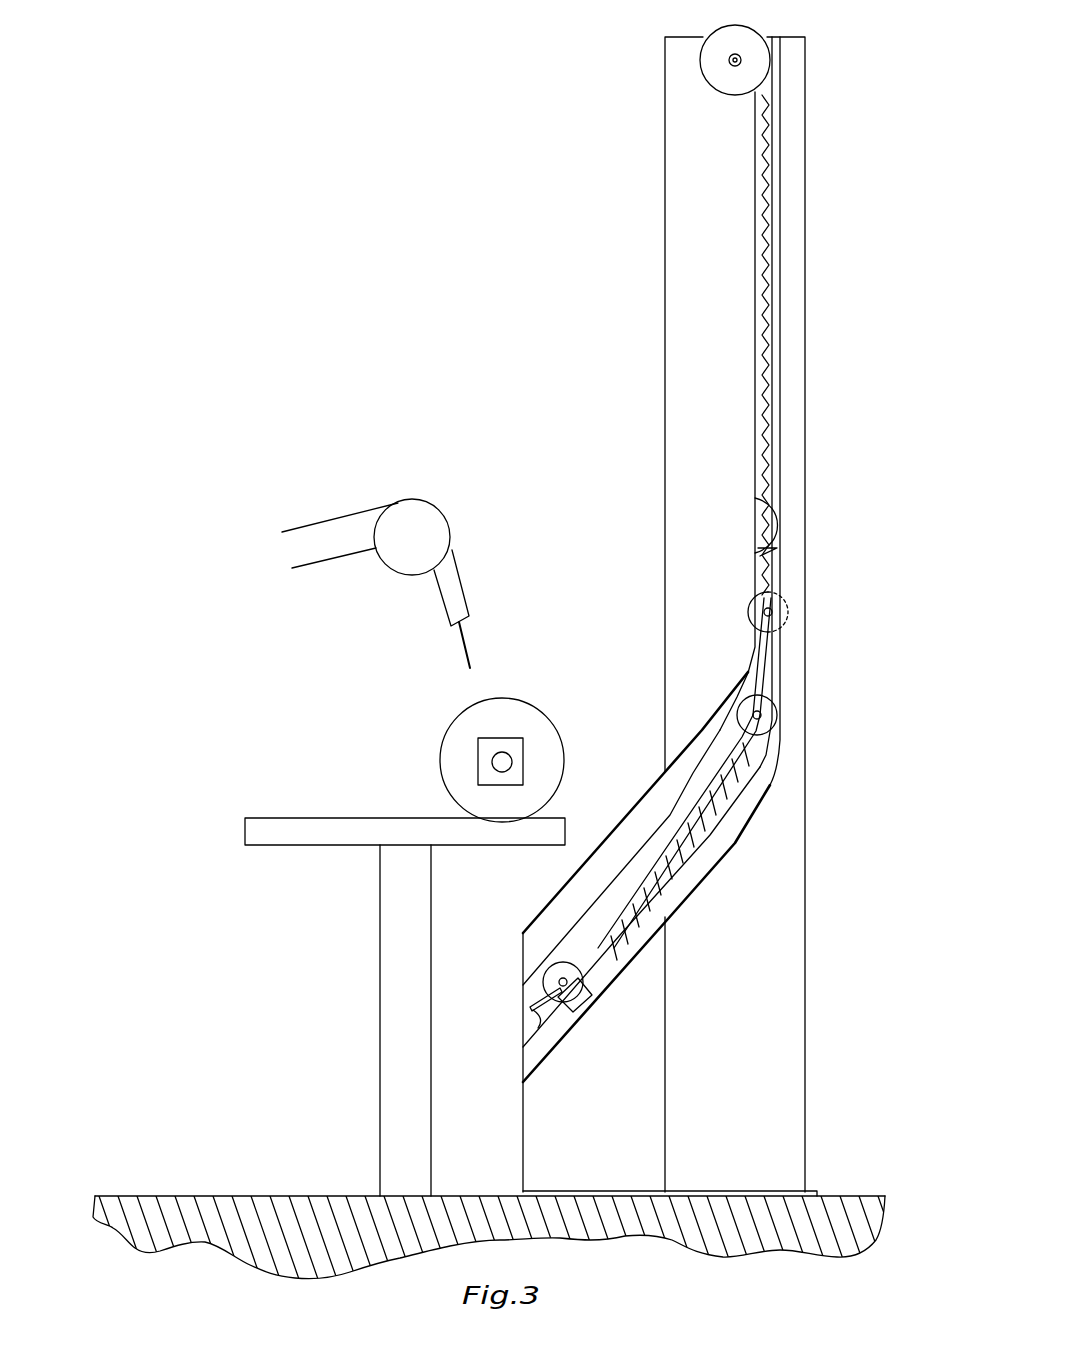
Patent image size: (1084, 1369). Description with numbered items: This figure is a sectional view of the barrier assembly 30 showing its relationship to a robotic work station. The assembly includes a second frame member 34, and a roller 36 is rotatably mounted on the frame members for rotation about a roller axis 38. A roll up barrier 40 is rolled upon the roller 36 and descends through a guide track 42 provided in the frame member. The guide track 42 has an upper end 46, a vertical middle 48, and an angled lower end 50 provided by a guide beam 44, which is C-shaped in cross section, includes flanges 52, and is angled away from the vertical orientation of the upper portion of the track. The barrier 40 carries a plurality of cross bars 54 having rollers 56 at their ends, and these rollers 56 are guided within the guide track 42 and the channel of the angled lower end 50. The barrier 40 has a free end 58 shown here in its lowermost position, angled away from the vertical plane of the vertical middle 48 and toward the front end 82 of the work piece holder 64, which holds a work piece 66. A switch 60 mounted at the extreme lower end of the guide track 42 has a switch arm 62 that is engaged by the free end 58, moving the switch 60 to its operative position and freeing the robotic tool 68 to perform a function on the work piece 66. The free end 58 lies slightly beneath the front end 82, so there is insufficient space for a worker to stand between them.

The barrier assembly 30 is at (595, 118).
The second frame member 34 is at (663, 46).
The roller 36 is at (720, 33).
The roller axis 38 is at (732, 64).
The roll up barrier 40 is at (750, 421).
The guide track 42 is at (760, 509).
The guide beam 44 is at (623, 800).
The upper end 46 is at (777, 45).
The vertical middle 48 is at (762, 358).
The angled lower end 50 is at (585, 920).
The flange 52 is at (580, 880).
The cross bar 54 is at (765, 610).
The roller 56 is at (763, 600).
The free end 58 is at (533, 1005).
The switch 60 is at (580, 1002).
The switch arm 62 is at (536, 1012).
The work piece holder 64 is at (456, 777).
The work piece 66 is at (496, 759).
The robotic tool 68 is at (437, 585).
The front end 82 is at (566, 825).